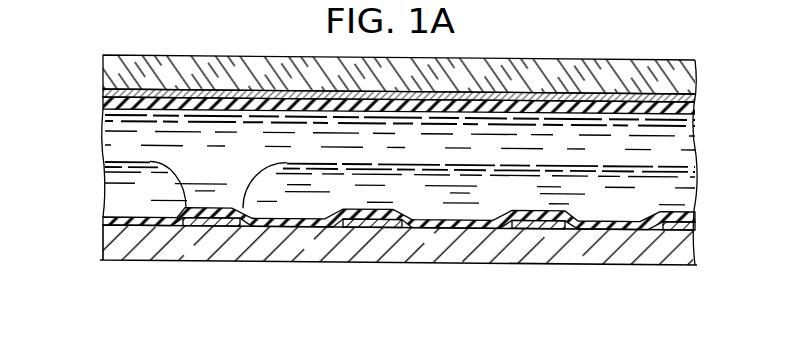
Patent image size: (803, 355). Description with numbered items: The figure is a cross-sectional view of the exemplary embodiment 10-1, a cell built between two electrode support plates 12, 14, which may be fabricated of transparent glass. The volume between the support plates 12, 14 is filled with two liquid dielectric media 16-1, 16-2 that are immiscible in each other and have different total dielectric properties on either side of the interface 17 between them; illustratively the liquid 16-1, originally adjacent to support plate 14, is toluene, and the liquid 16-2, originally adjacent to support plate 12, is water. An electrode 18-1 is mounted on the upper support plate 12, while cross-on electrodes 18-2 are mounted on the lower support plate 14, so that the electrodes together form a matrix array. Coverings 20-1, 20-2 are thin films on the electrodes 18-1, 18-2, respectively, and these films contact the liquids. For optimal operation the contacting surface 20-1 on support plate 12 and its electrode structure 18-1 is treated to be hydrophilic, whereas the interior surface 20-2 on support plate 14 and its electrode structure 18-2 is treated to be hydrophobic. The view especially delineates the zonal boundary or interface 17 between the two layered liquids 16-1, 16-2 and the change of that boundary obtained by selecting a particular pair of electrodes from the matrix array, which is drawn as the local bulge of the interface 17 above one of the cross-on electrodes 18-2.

The exemplary embodiment 10-1 is at (144, 37).
The electrode support plate 12 is at (696, 73).
The electrode 18-1 is at (696, 101).
The covering 20-1 is at (103, 105).
The liquid dielectric medium 16-2 is at (694, 139).
The interface 17 is at (682, 165).
The liquid dielectric medium 16-1 is at (687, 198).
The covering 20-2 is at (103, 221).
The cross-on electrodes 18-2 is at (213, 227).
The electrode support plate 14 is at (658, 264).